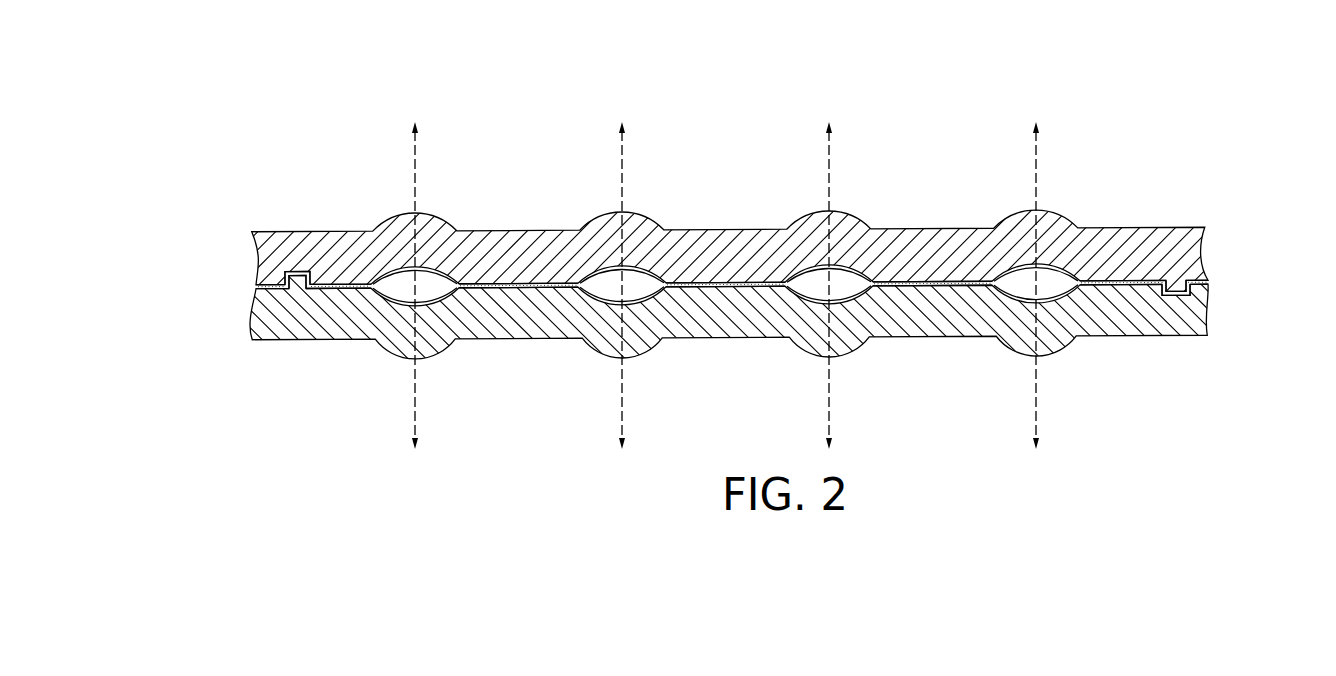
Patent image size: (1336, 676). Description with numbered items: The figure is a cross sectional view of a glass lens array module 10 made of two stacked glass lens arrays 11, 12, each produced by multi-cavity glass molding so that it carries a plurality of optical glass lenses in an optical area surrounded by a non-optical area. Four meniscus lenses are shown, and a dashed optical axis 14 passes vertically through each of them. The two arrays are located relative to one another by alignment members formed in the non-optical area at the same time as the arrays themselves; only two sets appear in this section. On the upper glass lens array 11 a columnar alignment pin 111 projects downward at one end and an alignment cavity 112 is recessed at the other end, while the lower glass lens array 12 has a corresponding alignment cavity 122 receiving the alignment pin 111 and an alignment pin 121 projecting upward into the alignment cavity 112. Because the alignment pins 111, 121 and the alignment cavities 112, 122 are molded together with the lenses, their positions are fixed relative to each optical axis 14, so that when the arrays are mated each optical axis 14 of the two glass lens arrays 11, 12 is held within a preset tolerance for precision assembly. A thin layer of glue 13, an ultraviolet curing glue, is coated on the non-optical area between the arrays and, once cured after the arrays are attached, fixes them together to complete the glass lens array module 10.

The glass lens array module 10 is at (310, 115).
The glass lens array 11 is at (1165, 232).
The alignment pin 111 is at (1177, 284).
The alignment cavity 112 is at (301, 269).
The glass lens array 12 is at (1160, 327).
The alignment pin 121 is at (297, 292).
The alignment cavity 122 is at (1190, 295).
The glue 13 is at (922, 286).
The optical axis 14 is at (741, 273).